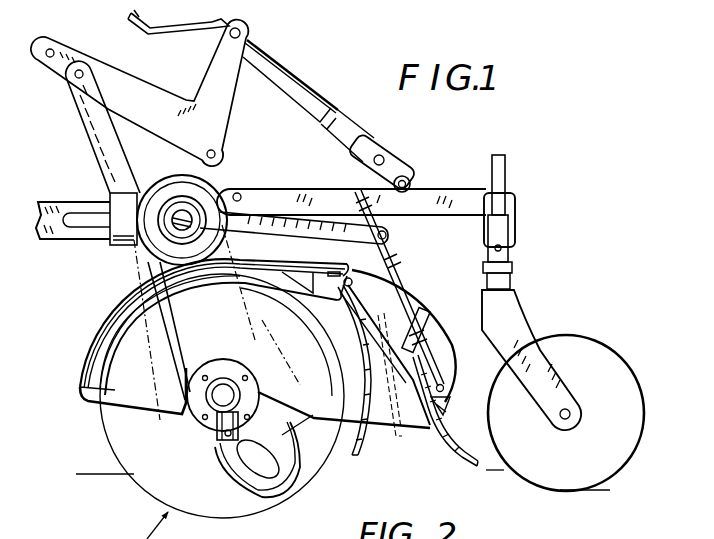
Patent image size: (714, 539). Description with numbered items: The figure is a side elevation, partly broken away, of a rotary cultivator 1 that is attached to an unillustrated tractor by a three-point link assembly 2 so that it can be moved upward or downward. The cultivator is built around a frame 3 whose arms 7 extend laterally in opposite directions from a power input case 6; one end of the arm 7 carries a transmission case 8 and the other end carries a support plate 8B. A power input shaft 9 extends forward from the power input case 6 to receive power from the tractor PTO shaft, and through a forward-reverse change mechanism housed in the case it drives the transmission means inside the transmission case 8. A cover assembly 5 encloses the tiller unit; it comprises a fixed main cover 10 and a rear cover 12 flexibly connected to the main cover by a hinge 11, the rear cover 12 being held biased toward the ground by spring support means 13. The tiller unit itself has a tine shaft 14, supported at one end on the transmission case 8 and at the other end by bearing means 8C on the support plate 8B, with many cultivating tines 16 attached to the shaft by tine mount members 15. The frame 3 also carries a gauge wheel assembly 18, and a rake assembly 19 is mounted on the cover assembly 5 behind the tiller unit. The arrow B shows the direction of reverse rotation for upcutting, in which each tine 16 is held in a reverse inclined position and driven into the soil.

The rotary cultivator 1 is at (339, 103).
The three-point link assembly 2 is at (83, 202).
The frame 3 is at (235, 90).
The cover assembly 5 is at (96, 327).
The power input case 6 is at (220, 188).
The arm 7 is at (170, 183).
The transmission case 8 is at (133, 403).
The support plate 8B is at (172, 402).
The bearing means 8C is at (252, 392).
The power input shaft 9 is at (85, 229).
The fixed main cover 10 is at (128, 303).
The hinge 11 is at (352, 281).
The rear cover 12 is at (445, 389).
The spring support means 13 is at (407, 294).
The tine shaft 14 is at (224, 385).
The tine mount member 15 is at (212, 434).
The cultivating tine 16 is at (255, 483).
The gauge wheel assembly 18 is at (513, 196).
The rake assembly 19 is at (357, 440).
The arrow B is at (296, 462).